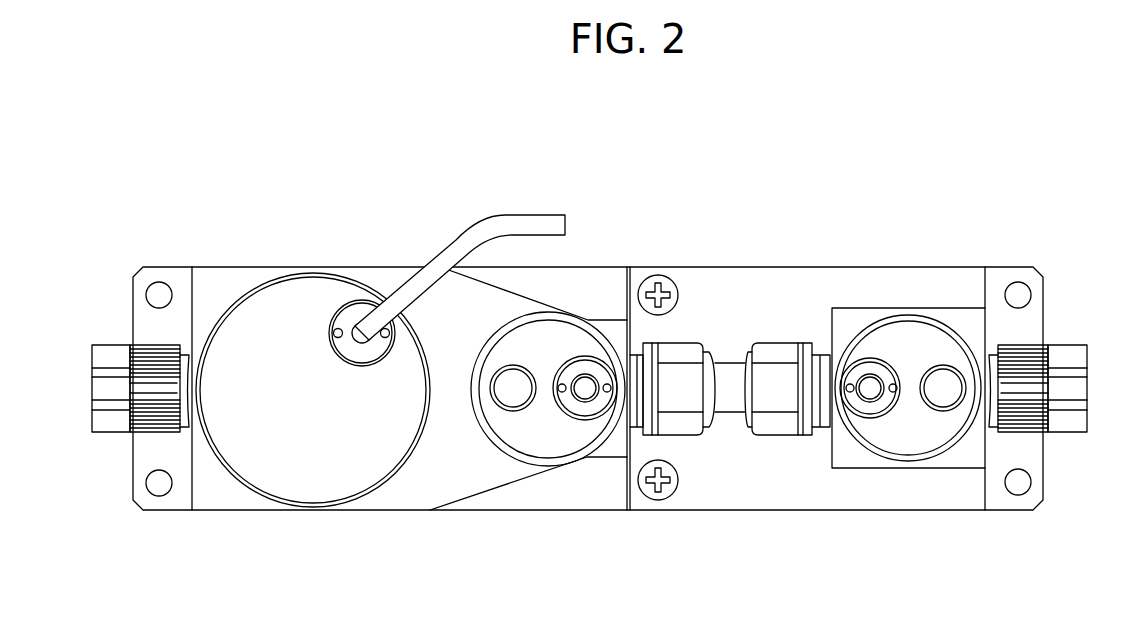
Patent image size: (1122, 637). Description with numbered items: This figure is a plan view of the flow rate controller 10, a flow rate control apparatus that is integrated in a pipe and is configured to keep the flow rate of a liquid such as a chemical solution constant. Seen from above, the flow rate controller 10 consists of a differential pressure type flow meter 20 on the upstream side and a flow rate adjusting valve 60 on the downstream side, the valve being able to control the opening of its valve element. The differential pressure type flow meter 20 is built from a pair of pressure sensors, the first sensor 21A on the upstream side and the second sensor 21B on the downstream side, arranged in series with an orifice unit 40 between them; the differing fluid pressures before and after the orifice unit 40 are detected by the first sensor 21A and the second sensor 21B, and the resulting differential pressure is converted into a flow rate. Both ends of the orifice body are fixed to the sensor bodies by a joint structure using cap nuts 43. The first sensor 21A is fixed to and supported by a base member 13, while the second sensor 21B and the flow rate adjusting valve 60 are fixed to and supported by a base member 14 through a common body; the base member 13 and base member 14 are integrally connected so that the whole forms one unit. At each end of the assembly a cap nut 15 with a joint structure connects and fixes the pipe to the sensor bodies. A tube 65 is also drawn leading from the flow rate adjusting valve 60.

The flow rate controller 10 is at (745, 215).
The base member 13 is at (875, 512).
The base member 14 is at (555, 512).
The cap nut 15 is at (108, 347).
The differential pressure type flow meter 20 is at (854, 280).
The first sensor 21A is at (955, 310).
The second sensor 21B is at (519, 478).
The orifice unit 40 is at (730, 389).
The cap nut 43 is at (683, 436).
The flow rate adjusting valve 60 is at (279, 519).
The tube 65 is at (522, 222).